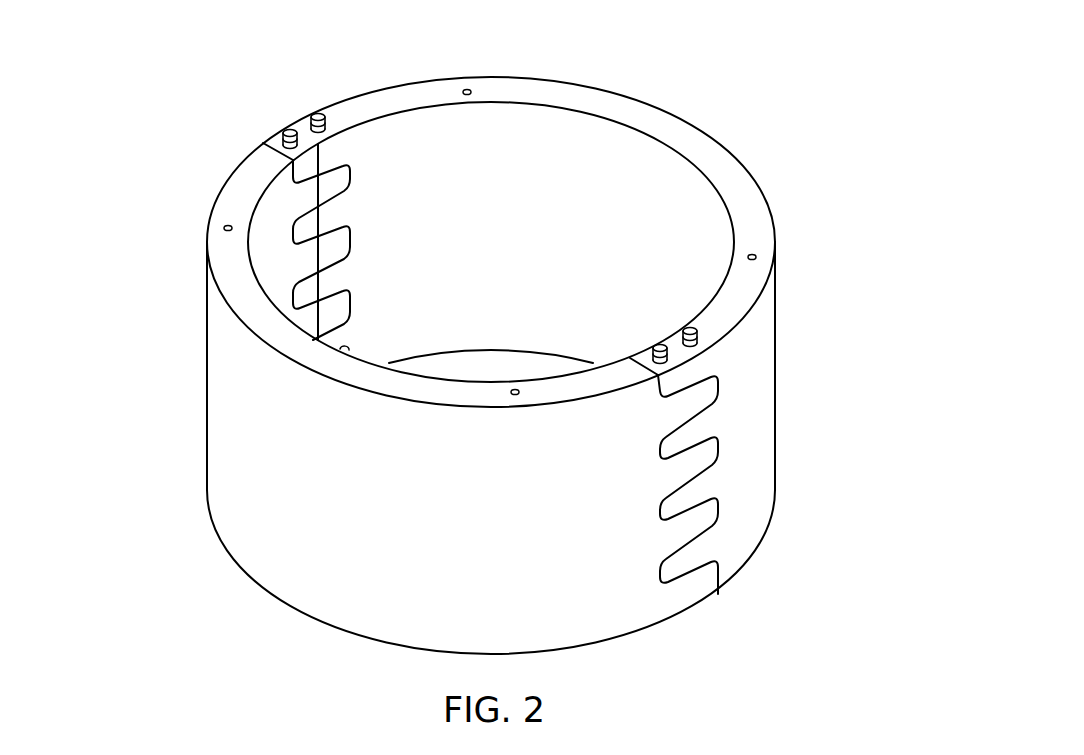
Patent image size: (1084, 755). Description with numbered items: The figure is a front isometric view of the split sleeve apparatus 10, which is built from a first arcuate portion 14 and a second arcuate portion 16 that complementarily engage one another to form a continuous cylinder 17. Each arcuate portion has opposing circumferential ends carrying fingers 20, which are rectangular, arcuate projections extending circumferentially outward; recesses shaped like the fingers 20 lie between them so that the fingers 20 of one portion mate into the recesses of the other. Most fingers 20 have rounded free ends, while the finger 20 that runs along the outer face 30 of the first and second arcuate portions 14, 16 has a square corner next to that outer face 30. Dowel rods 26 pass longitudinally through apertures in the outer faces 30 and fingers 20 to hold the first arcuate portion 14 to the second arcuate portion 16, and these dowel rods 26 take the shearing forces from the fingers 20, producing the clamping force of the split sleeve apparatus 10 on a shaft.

The split sleeve apparatus 10 is at (517, 332).
The first arcuate portion 14 is at (775, 355).
The second arcuate portion 16 is at (207, 407).
The continuous cylinder 17 is at (795, 176).
The fingers 20 is at (308, 297).
The dowel rods 26 is at (316, 113).
The outer face 30 is at (667, 132).